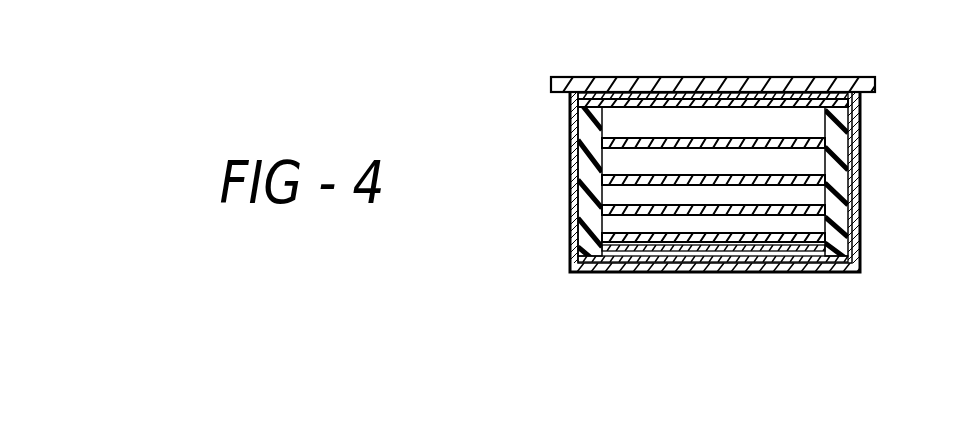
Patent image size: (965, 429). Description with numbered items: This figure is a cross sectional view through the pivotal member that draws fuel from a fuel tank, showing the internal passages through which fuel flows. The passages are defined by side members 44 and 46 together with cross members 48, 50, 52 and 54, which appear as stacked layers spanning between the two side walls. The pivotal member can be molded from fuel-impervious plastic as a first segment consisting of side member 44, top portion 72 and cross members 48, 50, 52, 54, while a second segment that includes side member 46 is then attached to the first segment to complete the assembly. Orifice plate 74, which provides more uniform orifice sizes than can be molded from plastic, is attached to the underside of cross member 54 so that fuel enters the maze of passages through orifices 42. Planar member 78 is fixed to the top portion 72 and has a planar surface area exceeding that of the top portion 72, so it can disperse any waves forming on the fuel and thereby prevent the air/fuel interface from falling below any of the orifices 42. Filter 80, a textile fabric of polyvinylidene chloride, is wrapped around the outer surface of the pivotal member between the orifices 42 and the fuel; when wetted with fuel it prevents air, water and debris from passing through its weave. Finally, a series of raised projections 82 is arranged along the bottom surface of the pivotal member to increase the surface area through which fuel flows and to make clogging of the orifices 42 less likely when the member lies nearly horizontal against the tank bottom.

The orifices 42 is at (674, 215).
The side member 44 is at (573, 190).
The side member 46 is at (848, 154).
The cross member 48 is at (790, 138).
The cross member 50 is at (800, 202).
The cross member 52 is at (848, 208).
The cross member 54 is at (833, 233).
The top portion 72 is at (622, 107).
The orifice plate 74 is at (573, 243).
The planar member 78 is at (718, 84).
The filter 80 is at (695, 273).
The raised projections 82 is at (607, 258).